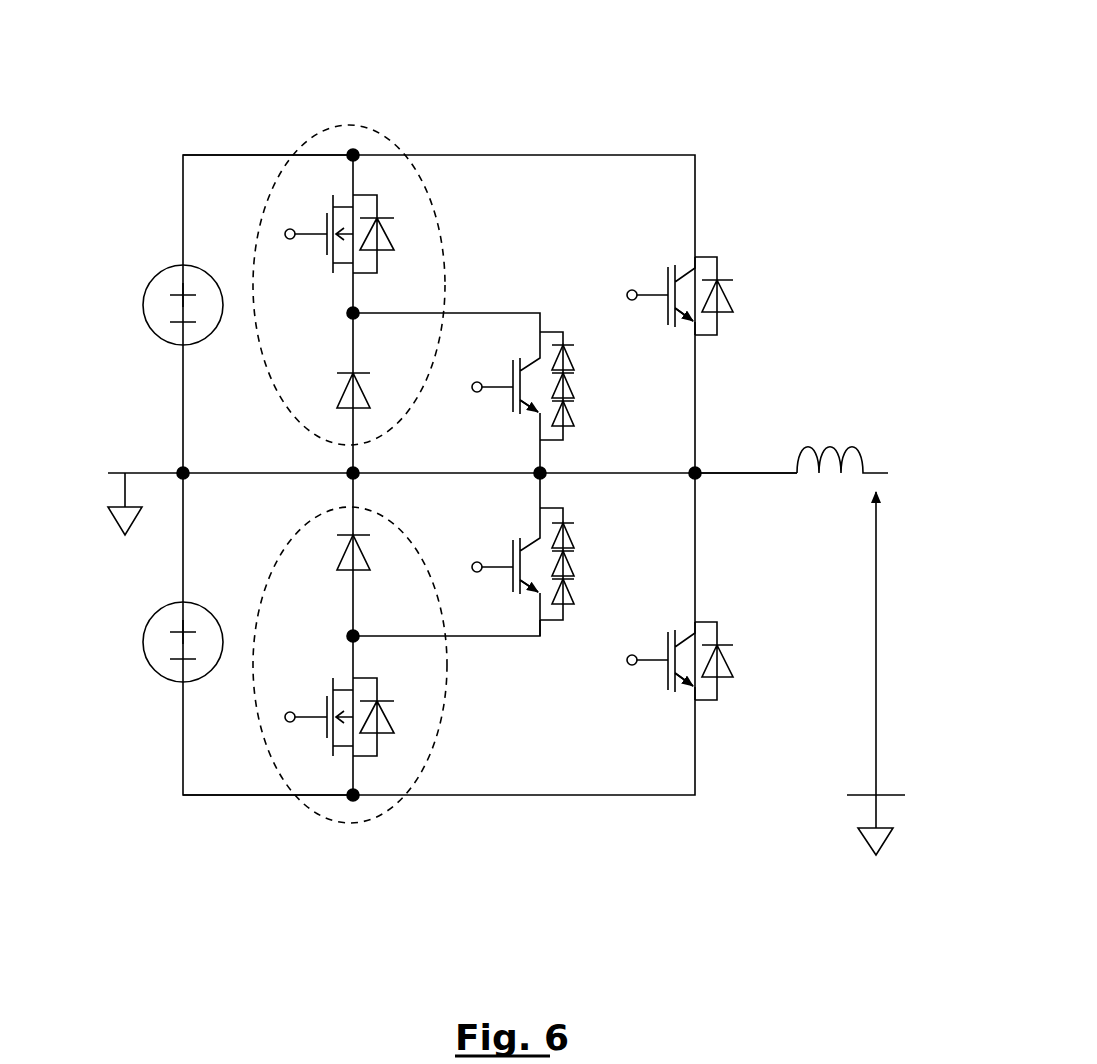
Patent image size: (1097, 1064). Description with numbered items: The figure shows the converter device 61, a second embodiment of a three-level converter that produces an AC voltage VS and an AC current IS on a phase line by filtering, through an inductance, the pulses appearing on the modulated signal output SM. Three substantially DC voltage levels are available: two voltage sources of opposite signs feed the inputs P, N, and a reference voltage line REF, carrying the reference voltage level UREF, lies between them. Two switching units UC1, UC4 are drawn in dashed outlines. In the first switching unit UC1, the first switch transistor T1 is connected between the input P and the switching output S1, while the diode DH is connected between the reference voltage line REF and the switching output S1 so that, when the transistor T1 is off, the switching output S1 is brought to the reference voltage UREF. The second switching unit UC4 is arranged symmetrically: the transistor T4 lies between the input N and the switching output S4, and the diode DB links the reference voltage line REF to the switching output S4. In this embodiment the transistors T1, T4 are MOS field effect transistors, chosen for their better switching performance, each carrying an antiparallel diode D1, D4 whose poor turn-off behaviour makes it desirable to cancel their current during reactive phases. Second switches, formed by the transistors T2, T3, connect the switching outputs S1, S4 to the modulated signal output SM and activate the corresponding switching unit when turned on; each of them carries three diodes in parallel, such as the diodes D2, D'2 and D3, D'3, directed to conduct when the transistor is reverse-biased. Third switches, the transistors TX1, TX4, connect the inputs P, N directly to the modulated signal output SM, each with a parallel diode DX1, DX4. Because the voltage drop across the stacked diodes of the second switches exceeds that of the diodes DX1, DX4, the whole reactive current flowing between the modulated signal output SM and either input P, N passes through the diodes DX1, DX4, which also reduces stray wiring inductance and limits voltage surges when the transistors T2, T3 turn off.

The converter device 61 is at (734, 109).
The first switching unit UC1 is at (380, 134).
The second switching unit UC4 is at (418, 782).
The first switch transistor T1 is at (319, 234).
The diode of first switch D1 is at (389, 234).
The switching output S1 is at (353, 313).
The diode DH is at (369, 393).
The diode DB is at (368, 552).
The second switch transistor T2 is at (506, 402).
The diode of second switch D2 is at (581, 357).
The diode of second switch D'2 is at (583, 385).
The second switch transistor T3 is at (506, 554).
The diode of second switch D3 is at (581, 535).
The diode of second switch D'3 is at (583, 563).
The first switch transistor T4 is at (319, 717).
The diode of first switch D4 is at (388, 717).
The switching output S4 is at (353, 636).
The third switch transistor TX1 is at (655, 296).
The diode of third switch DX1 is at (736, 296).
The third switch transistor TX4 is at (655, 661).
The diode of third switch DX4 is at (736, 661).
The modulated signal output SM is at (695, 473).
The AC current IS is at (848, 435).
The AC voltage VS is at (891, 639).
The input P is at (268, 141).
The input N is at (268, 782).
The reference voltage level UREF is at (452, 462).
The reference voltage line REF is at (505, 676).